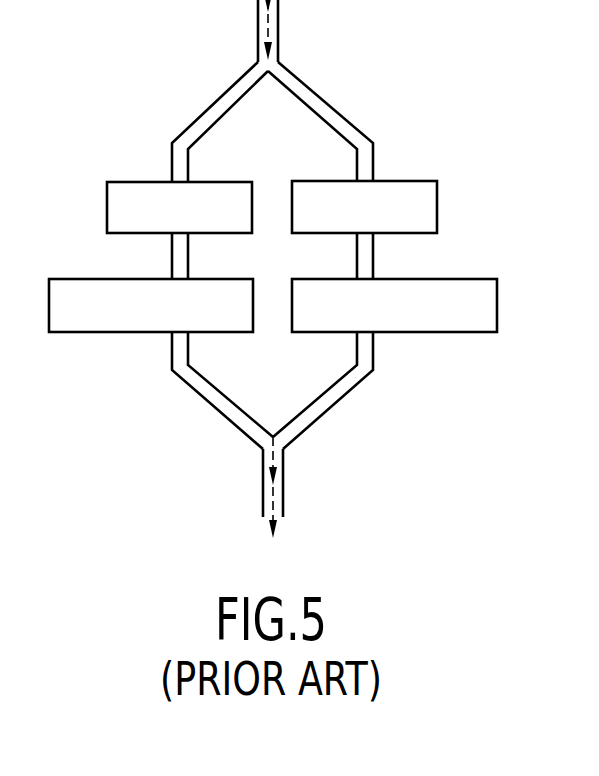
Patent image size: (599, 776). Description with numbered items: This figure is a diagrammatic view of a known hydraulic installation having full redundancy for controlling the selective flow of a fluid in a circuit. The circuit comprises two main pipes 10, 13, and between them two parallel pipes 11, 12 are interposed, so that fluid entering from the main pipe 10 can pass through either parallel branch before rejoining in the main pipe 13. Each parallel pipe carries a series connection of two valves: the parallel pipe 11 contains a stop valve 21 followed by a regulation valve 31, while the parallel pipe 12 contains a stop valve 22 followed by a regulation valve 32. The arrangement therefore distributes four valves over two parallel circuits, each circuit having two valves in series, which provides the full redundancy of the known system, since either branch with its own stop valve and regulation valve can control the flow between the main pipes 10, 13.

The main pipe 10 is at (279, 25).
The parallel pipe 11 is at (215, 98).
The parallel pipe 12 is at (325, 100).
The main pipe 13 is at (283, 491).
The stop valve 21 is at (132, 180).
The stop valve 22 is at (413, 179).
The regulation valve 31 is at (75, 277).
The regulation valve 32 is at (470, 277).